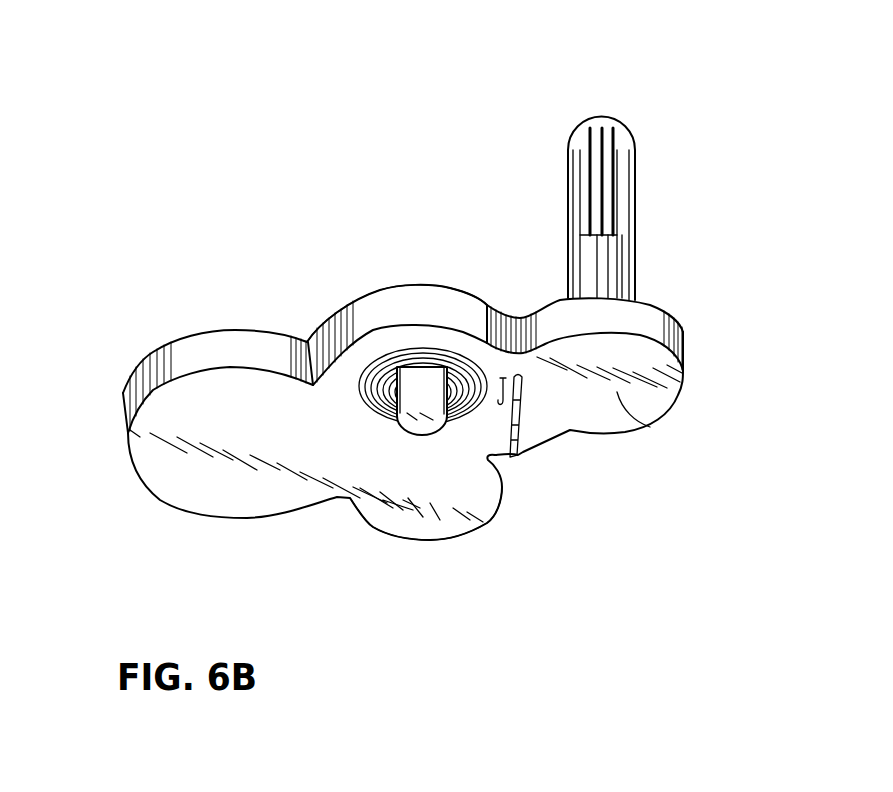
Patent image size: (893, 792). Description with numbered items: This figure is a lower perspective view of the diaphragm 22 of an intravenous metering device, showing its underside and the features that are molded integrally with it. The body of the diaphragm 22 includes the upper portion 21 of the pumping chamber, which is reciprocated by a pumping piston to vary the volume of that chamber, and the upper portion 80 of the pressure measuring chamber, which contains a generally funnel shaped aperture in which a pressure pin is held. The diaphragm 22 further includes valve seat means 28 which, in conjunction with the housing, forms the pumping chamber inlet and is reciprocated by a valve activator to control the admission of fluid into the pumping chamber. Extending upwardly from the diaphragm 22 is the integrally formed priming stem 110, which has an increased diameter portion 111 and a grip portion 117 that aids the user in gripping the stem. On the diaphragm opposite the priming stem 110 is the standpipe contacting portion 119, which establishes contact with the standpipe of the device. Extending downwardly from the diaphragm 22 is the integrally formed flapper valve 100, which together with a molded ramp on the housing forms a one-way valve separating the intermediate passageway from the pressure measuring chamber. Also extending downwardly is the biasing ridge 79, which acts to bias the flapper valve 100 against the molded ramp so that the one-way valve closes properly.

The upper portion of pumping chamber 21 is at (222, 472).
The diaphragm 22 is at (405, 300).
The valve seat means 28 is at (430, 510).
The biasing ridge 79 is at (503, 376).
The upper portion of pressure measuring chamber 80 is at (413, 423).
The flapper valve 100 is at (522, 457).
The priming stem 110 is at (647, 177).
The increased diameter portion 111 is at (608, 250).
The grip portion 117 is at (605, 168).
The standpipe contacting portion 119 is at (647, 427).